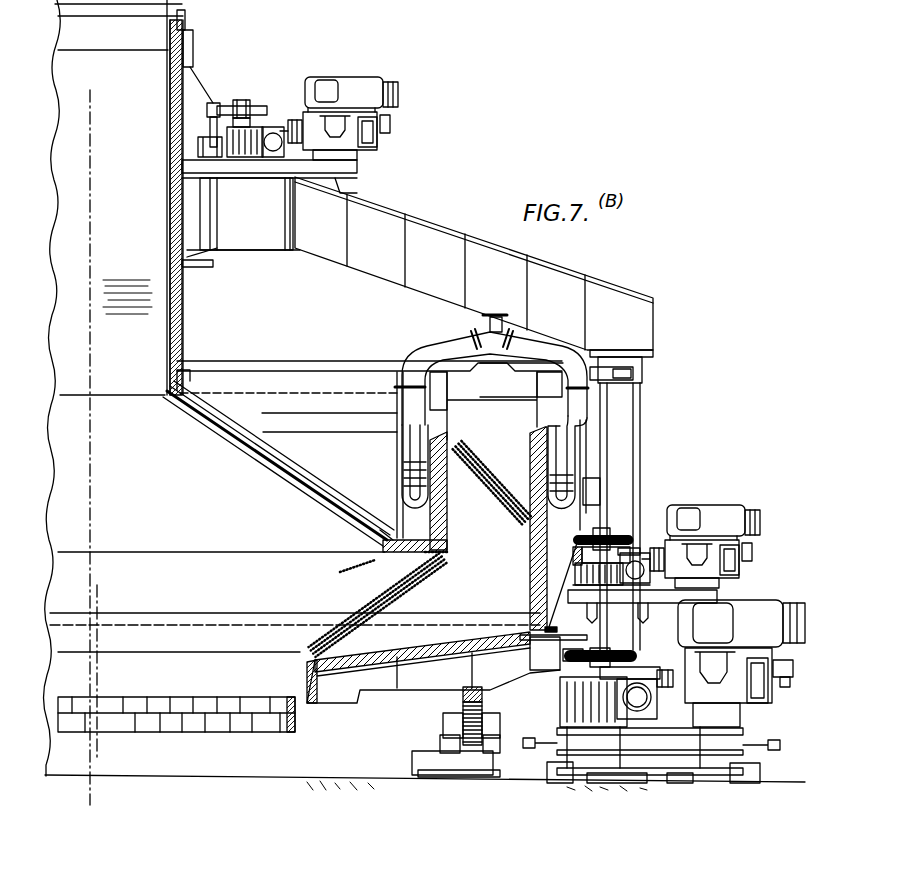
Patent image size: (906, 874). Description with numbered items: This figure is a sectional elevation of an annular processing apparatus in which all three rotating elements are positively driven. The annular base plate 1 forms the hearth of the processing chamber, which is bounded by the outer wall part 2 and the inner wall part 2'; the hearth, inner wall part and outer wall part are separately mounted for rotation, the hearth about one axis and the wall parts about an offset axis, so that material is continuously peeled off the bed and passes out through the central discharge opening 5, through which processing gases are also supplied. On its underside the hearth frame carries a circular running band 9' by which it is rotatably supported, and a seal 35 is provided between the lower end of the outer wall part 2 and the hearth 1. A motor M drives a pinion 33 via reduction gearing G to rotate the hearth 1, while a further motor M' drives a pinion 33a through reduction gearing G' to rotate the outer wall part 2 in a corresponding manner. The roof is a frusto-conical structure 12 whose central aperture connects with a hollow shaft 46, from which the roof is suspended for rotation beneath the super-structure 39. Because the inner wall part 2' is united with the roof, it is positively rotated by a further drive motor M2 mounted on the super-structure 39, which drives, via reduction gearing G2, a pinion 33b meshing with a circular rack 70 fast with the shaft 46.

The circular rack 70 is at (182, 153).
The pinion 33b is at (263, 108).
The drive motor M2 is at (368, 53).
The reduction gearing G2 is at (260, 160).
The hollow shaft 46 is at (172, 148).
The super-structure 39 is at (395, 219).
The frusto conical structure 12 is at (263, 462).
The inner wall part 2' is at (423, 492).
The outer wall part 2 is at (428, 542).
The base plate 1 is at (448, 640).
The central discharge opening 5 is at (138, 669).
The running band 9' is at (463, 732).
The seal 35 is at (550, 631).
The pinion 33 is at (635, 657).
The pinion 33a is at (618, 535).
The reduction gearing G' is at (616, 549).
The motor M' is at (701, 533).
The motor M is at (741, 651).
The reduction gearing G is at (616, 697).